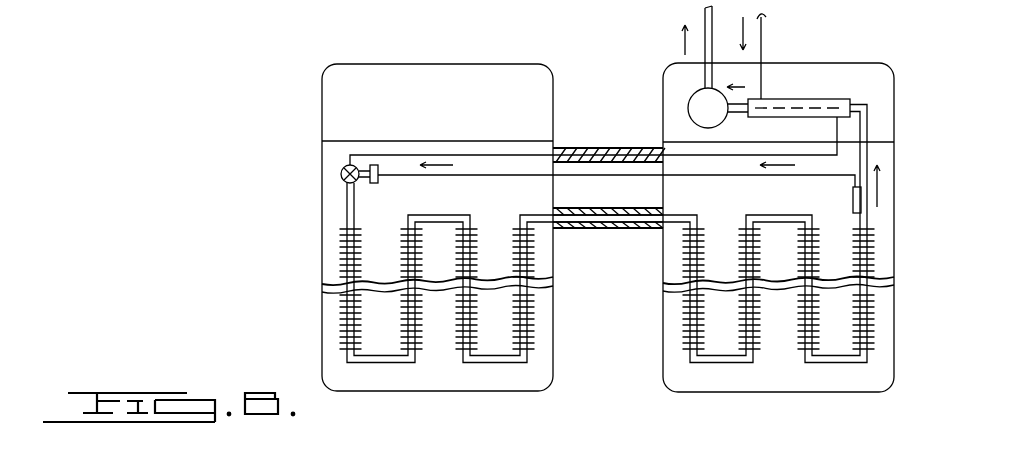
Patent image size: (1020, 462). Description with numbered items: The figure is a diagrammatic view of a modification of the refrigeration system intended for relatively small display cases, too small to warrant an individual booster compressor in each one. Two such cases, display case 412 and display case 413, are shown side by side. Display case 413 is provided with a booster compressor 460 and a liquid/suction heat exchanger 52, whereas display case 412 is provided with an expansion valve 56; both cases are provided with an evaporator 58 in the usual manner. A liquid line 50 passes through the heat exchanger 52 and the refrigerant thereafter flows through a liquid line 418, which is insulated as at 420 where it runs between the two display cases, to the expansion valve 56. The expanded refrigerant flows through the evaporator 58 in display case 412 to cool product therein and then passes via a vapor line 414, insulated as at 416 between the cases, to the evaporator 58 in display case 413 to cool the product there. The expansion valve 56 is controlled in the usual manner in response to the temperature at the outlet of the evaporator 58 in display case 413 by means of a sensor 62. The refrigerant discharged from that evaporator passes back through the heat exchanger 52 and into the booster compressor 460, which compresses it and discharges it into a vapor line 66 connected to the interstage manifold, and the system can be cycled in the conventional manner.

The liquid line 50 is at (767, 25).
The liquid/suction heat exchanger 52 is at (818, 99).
The expansion valve 56 is at (340, 174).
The evaporator 58 is at (470, 363).
The sensor 62 is at (853, 208).
The vapor line 66 is at (705, 13).
The display case 412 is at (553, 352).
The display case 413 is at (895, 224).
The vapor line 414 is at (609, 228).
The insulation 416 is at (590, 214).
The liquid line 418 is at (481, 153).
The insulation 420 is at (597, 148).
The booster compressor 460 is at (700, 102).